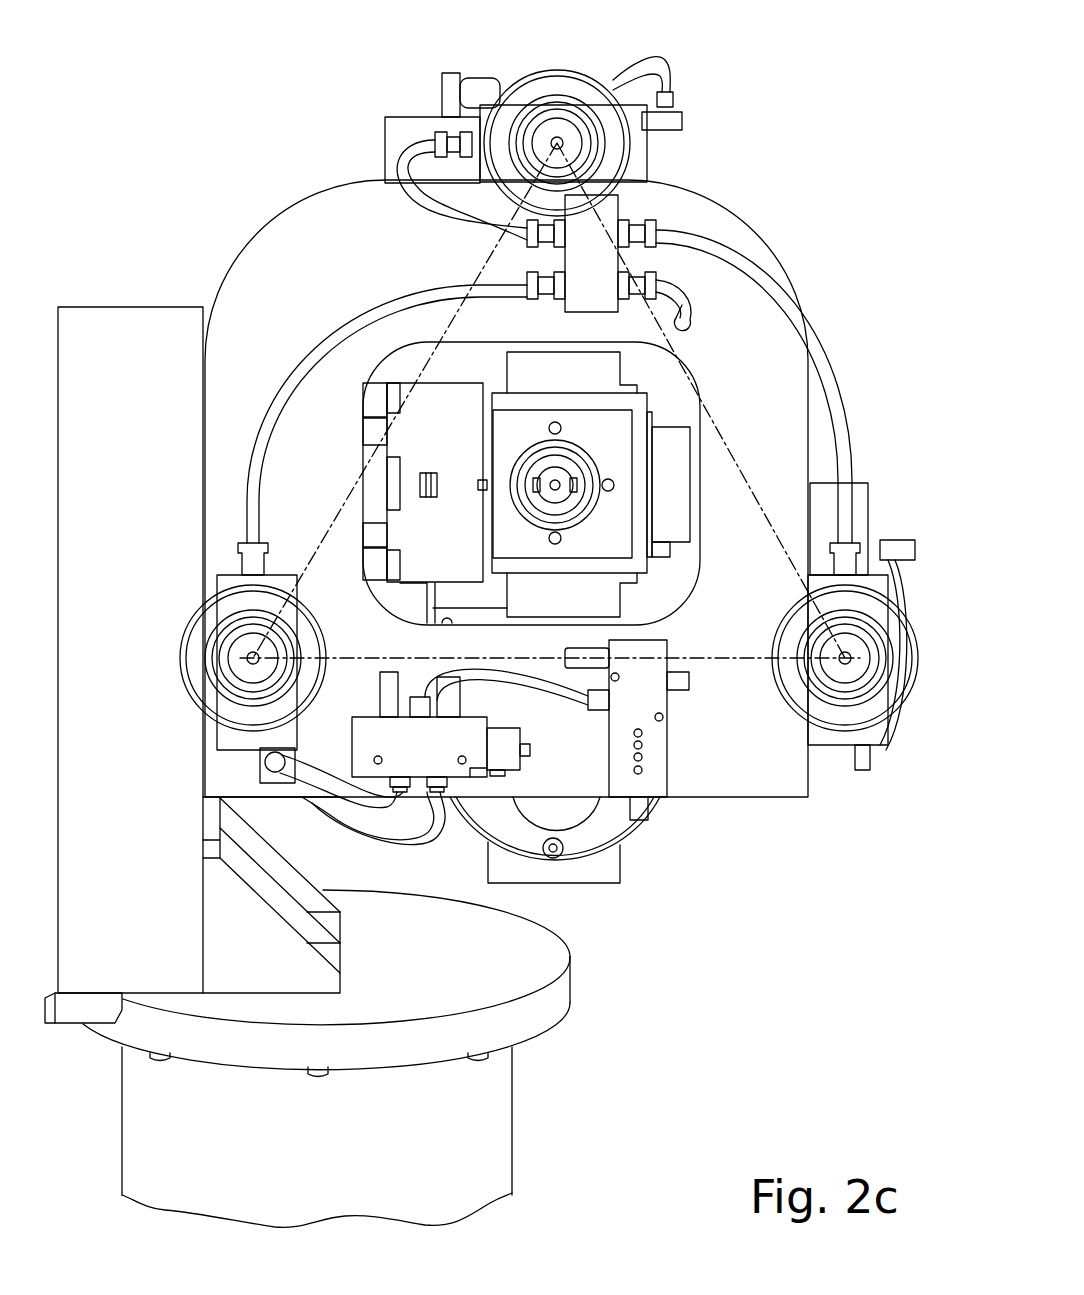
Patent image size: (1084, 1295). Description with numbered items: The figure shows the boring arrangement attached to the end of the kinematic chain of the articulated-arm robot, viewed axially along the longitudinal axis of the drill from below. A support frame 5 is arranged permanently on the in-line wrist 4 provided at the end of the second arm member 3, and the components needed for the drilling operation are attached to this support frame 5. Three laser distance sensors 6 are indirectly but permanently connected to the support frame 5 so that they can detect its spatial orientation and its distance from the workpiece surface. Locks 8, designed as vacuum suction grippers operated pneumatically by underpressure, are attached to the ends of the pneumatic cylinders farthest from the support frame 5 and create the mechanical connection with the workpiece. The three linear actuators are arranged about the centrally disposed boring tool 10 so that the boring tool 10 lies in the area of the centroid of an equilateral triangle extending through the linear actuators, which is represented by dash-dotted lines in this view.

The second arm member 3 is at (480, 1167).
The in-line wrist 4 is at (136, 333).
The support frame 5 is at (308, 225).
The laser distance sensors 6 is at (596, 588).
The locks 8 is at (548, 85).
The boring tool 10 is at (558, 468).